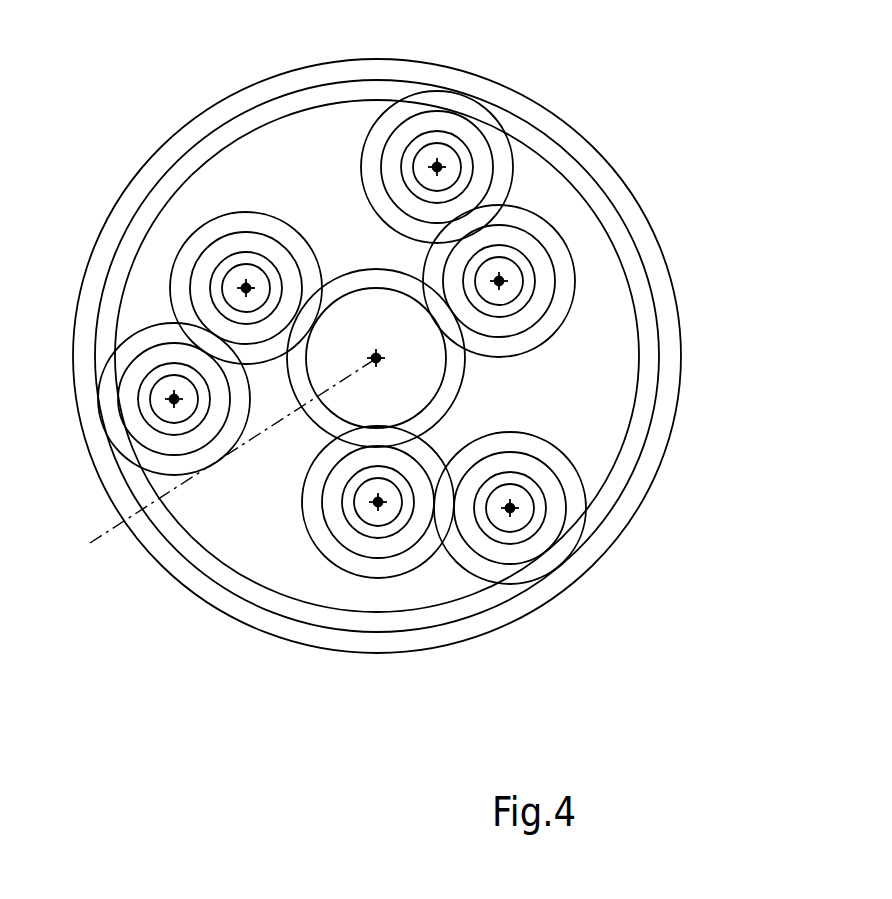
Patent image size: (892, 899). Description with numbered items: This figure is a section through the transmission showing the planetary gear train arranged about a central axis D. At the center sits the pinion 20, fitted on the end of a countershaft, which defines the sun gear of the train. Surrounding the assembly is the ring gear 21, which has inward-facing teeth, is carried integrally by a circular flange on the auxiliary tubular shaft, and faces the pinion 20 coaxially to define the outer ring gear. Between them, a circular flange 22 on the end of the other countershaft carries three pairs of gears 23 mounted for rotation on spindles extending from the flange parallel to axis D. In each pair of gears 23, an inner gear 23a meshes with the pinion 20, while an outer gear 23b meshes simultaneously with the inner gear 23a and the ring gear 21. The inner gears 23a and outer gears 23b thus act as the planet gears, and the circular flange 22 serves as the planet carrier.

The pinion 20 is at (333, 420).
The ring gear 21 is at (628, 495).
The circular flange 22 is at (610, 390).
The pair of gears 23 is at (533, 187).
The inner gear 23a is at (220, 227).
The outer gear 23b is at (400, 133).
The axis D is at (225, 460).